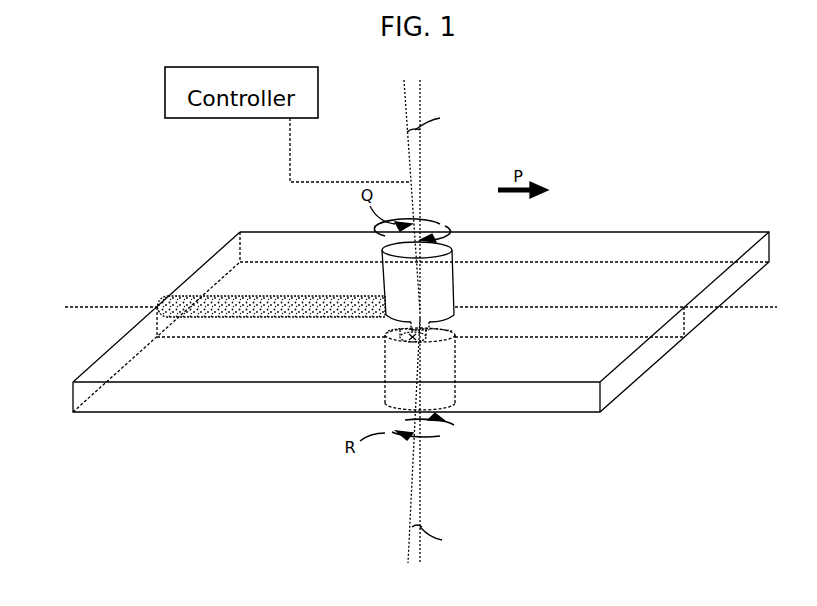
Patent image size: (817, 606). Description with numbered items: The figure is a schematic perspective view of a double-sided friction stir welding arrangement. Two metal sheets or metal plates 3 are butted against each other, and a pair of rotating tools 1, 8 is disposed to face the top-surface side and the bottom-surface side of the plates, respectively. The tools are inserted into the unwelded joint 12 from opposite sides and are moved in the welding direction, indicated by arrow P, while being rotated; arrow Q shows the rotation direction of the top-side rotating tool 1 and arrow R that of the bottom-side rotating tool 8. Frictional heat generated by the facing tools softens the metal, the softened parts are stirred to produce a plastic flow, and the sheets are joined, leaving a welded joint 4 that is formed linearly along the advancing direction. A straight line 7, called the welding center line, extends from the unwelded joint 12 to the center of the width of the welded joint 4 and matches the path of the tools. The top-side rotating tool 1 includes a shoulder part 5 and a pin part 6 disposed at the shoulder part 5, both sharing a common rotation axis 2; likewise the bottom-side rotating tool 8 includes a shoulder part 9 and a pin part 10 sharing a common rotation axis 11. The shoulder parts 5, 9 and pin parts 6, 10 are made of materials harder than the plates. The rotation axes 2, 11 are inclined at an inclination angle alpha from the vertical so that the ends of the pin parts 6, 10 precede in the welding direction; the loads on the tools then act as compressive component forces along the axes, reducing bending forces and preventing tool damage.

The rotating tool 1 is at (447, 282).
The rotation axis 2 is at (404, 103).
The metal sheets or metal plates 3 is at (705, 275).
The welded joint 4 is at (188, 298).
The shoulder part 5 is at (456, 312).
The pin part 6 is at (432, 323).
The straight line (welding center line) 7 is at (90, 307).
The rotating tool 8 is at (445, 393).
The shoulder part 9 is at (440, 342).
The pin part 10 is at (415, 331).
The rotation axis 11 is at (408, 545).
The unwelded joint 12 is at (630, 327).